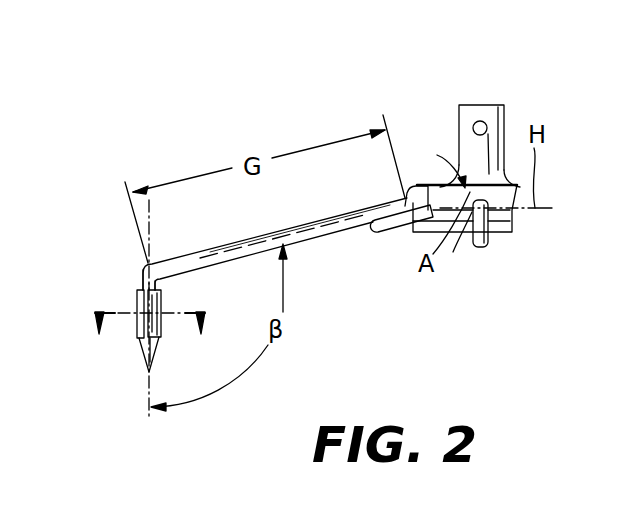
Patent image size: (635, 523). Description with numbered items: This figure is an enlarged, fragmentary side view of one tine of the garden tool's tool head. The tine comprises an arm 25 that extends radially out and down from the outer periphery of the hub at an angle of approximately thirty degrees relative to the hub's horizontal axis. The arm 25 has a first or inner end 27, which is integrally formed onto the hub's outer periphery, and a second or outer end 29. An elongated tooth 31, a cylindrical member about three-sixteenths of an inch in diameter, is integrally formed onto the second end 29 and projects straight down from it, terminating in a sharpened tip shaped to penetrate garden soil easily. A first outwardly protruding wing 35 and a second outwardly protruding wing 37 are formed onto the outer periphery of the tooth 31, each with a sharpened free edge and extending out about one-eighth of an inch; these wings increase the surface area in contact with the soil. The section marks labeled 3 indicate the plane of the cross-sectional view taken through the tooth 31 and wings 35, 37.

The arm 25 is at (267, 233).
The first or inner end 27 is at (403, 199).
The second or outer end 29 is at (150, 230).
The elongated tooth 31 is at (143, 283).
The first outwardly protruding wing 35 is at (138, 330).
The second outwardly protruding wing 37 is at (160, 298).
The section line 3- 3 is at (150, 341).